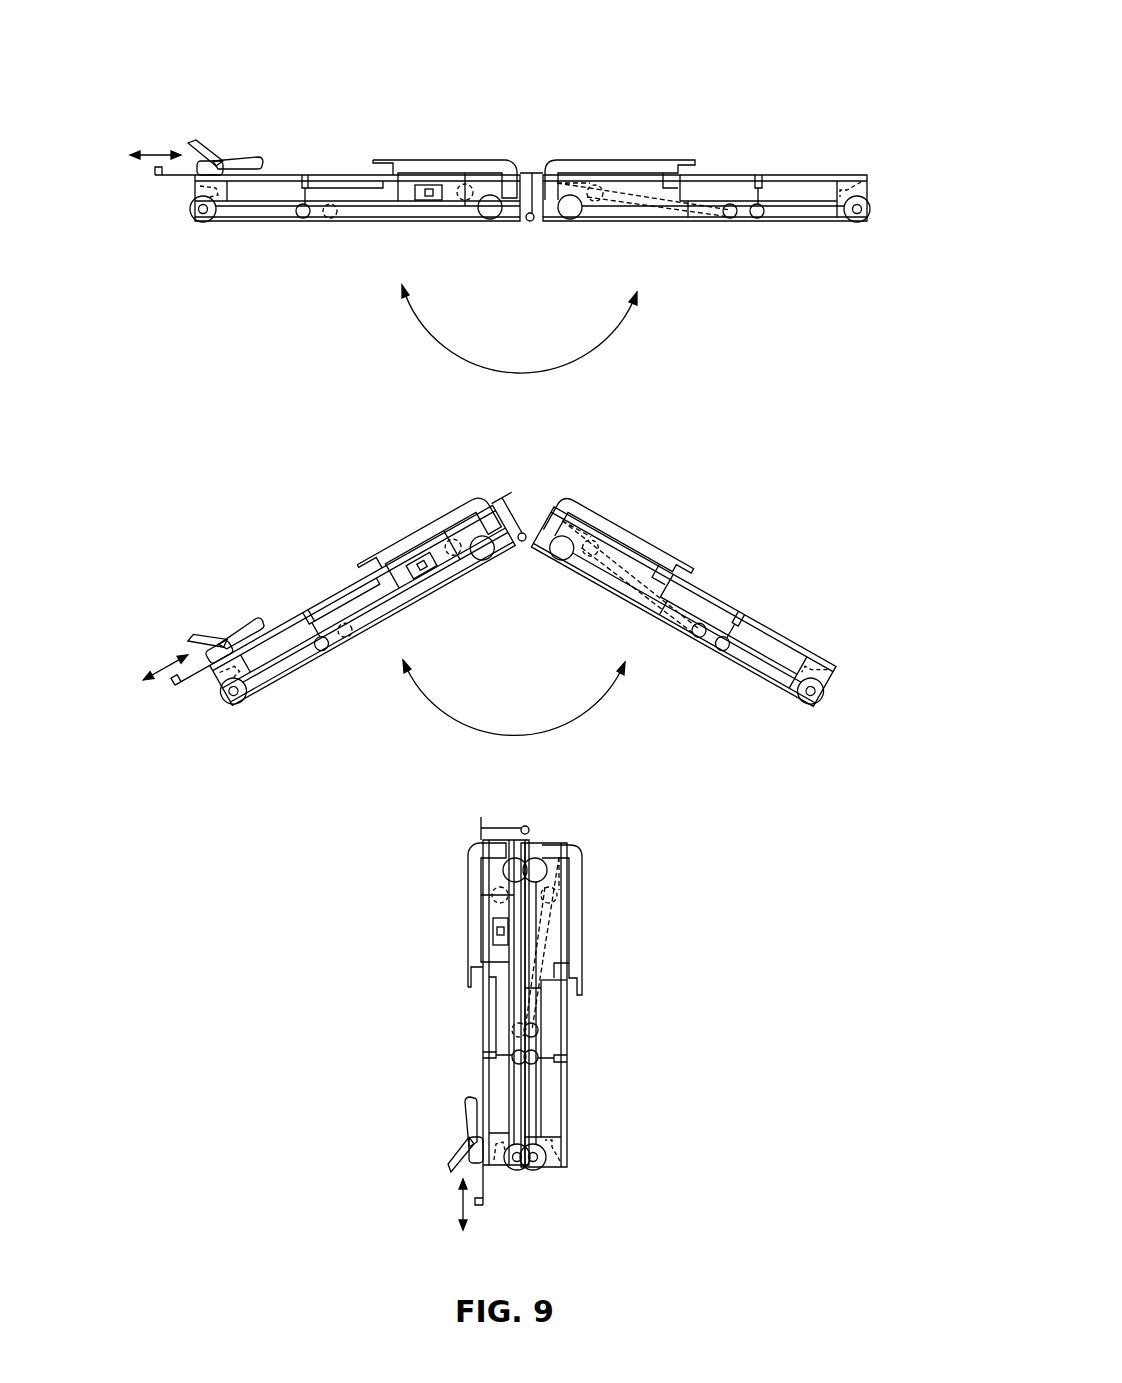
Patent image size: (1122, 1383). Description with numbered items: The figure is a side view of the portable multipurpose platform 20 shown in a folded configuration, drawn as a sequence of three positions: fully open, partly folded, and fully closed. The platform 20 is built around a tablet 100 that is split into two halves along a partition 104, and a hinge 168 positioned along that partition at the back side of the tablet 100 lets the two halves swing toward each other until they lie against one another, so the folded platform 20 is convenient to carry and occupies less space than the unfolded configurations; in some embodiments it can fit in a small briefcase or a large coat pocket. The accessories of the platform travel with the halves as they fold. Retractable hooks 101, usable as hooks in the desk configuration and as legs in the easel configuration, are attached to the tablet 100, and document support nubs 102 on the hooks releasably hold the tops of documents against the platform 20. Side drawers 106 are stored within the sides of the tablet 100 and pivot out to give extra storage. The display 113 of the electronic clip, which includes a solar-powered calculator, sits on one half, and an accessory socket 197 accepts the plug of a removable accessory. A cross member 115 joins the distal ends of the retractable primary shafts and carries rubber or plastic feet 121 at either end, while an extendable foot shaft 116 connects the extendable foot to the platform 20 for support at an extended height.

The multipurpose platform 20 is at (510, 615).
The tablet 100 is at (340, 175).
The retractable hooks 101 is at (476, 162).
The document support nubs 102 is at (690, 162).
The partition 104 is at (535, 173).
The side drawers 106 is at (865, 182).
The display 113 is at (222, 155).
The cross member 115 is at (823, 218).
The extendable foot shaft 116 is at (633, 207).
The feet 121 is at (567, 190).
The hinge 168 is at (531, 222).
The accessory socket 197 is at (192, 187).